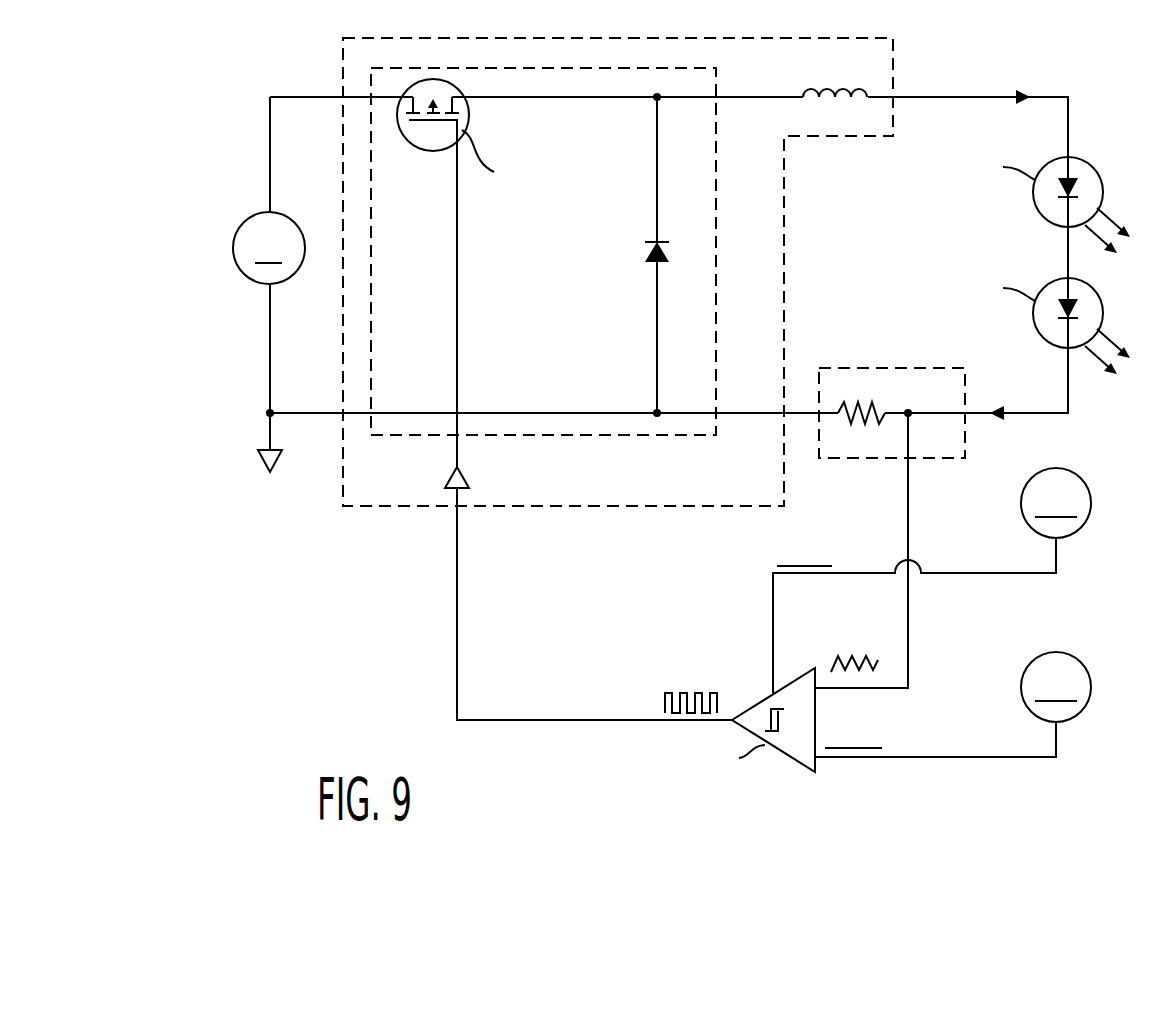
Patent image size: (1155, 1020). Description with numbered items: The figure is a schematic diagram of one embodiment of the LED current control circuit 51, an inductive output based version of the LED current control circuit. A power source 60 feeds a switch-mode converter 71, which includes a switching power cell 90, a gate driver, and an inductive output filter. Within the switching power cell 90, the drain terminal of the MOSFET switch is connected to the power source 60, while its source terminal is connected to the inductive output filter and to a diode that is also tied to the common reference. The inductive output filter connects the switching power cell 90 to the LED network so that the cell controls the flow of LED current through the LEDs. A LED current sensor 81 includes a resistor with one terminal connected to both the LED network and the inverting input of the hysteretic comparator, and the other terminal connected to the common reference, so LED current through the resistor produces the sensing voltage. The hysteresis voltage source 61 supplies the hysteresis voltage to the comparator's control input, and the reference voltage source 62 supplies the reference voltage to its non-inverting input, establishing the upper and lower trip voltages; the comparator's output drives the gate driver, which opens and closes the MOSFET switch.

The LED current control circuit 51 is at (337, 610).
The power source 60 is at (243, 222).
The hysteresis voltage source 61 is at (1092, 512).
The reference voltage source 62 is at (1092, 696).
The switch-mode converter 71 is at (785, 197).
The LED current sensor 81 is at (870, 368).
The switching power cell 90 is at (722, 268).